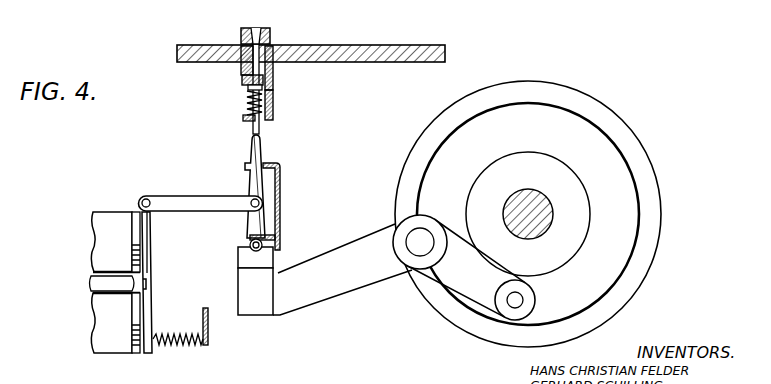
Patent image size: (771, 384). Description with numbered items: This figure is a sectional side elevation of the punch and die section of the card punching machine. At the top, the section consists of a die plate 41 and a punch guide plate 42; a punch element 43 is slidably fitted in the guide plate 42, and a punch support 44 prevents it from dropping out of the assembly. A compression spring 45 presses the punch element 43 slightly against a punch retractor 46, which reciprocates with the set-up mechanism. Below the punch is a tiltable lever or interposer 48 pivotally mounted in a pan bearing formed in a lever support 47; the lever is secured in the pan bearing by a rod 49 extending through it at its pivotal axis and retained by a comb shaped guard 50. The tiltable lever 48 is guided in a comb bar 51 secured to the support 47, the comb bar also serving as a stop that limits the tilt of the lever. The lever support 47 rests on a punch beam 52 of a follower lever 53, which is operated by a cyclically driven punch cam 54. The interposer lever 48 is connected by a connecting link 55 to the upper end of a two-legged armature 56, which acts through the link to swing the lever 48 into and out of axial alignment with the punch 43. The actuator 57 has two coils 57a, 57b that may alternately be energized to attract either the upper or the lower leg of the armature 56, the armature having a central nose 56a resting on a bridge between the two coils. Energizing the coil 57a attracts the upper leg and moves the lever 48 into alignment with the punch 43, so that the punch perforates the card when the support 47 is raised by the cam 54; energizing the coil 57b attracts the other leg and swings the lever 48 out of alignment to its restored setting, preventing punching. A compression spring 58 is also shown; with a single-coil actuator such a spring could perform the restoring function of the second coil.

The die plate 41 is at (270, 33).
The punch guide plate 42 is at (243, 64).
The punch element 43 is at (270, 70).
The punch support 44 is at (273, 105).
The compression spring 45 is at (253, 108).
The punch retractor 46 is at (243, 85).
The lever support 47 is at (245, 259).
The tiltable lever 48 is at (262, 156).
The rod 49 is at (249, 243).
The comb shaped guard 50 is at (280, 234).
The comb bar 51 is at (283, 188).
The punch beam 52 is at (245, 288).
The follower lever 53 is at (358, 288).
The punch cam 54 is at (483, 326).
The connecting link 55 is at (199, 192).
The two-legged armature 56 is at (148, 251).
The central nose 56a is at (148, 283).
The actuator 57 is at (74, 287).
The coil 57a is at (92, 251).
The coil 57b is at (95, 325).
The compression spring 58 is at (188, 348).